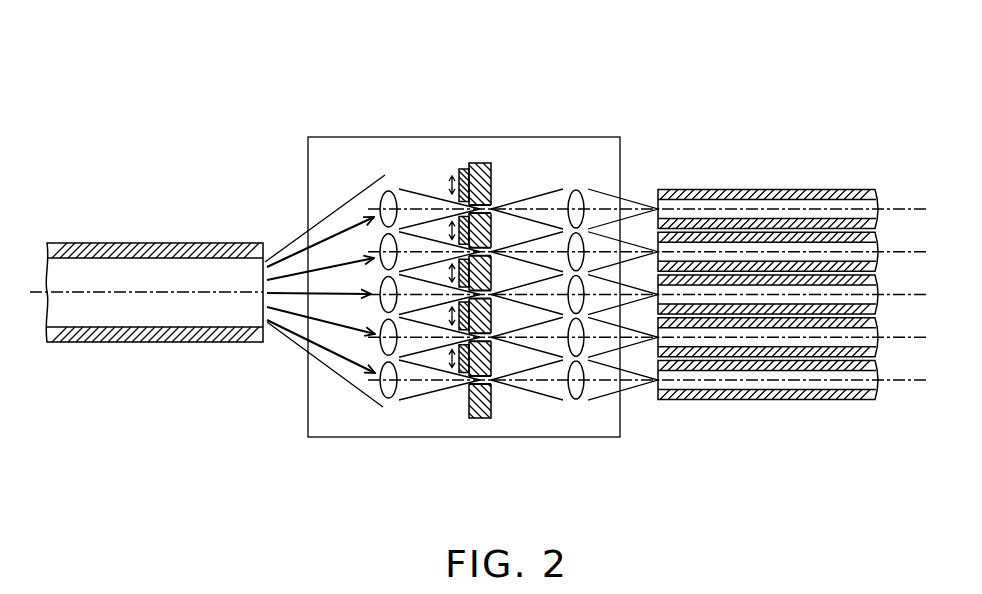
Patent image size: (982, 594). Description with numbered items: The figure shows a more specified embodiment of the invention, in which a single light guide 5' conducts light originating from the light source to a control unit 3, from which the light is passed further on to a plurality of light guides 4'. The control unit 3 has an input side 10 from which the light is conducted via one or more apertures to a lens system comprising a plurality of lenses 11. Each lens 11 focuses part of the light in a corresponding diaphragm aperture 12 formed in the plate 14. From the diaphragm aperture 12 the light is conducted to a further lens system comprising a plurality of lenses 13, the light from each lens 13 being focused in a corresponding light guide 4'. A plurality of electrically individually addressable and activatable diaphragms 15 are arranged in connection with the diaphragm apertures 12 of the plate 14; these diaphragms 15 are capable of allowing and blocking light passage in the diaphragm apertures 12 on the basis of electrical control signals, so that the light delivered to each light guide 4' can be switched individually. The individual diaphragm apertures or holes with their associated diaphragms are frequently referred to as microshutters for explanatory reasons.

The control unit 3 is at (503, 137).
The light guides 4' is at (768, 299).
The single light guide 5' is at (146, 253).
The input side 10 is at (308, 165).
The lenses 11 is at (381, 343).
The diaphragm aperture 12 is at (462, 380).
The lenses 13 is at (577, 397).
The plate 14 is at (491, 404).
The diaphragms 15 is at (460, 170).